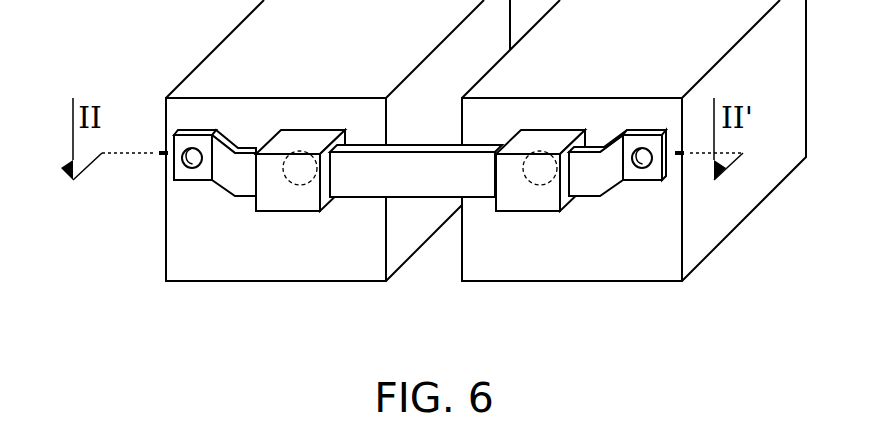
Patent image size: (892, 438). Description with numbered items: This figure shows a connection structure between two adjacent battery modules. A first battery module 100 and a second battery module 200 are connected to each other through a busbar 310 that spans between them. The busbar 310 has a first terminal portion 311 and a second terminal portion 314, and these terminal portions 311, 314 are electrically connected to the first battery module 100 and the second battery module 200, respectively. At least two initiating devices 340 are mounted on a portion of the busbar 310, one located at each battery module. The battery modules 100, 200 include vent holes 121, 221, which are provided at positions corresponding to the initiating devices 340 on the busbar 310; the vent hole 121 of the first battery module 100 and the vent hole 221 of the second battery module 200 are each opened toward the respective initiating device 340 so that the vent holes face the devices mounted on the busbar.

The first battery module 100 is at (354, 48).
The second battery module 200 is at (649, 48).
The vent hole 121 is at (297, 174).
The vent hole 221 is at (542, 172).
The busbar 310 is at (581, 197).
The first terminal portion 311 is at (192, 181).
The second terminal portion 314 is at (640, 181).
The initiating device 340 is at (288, 211).